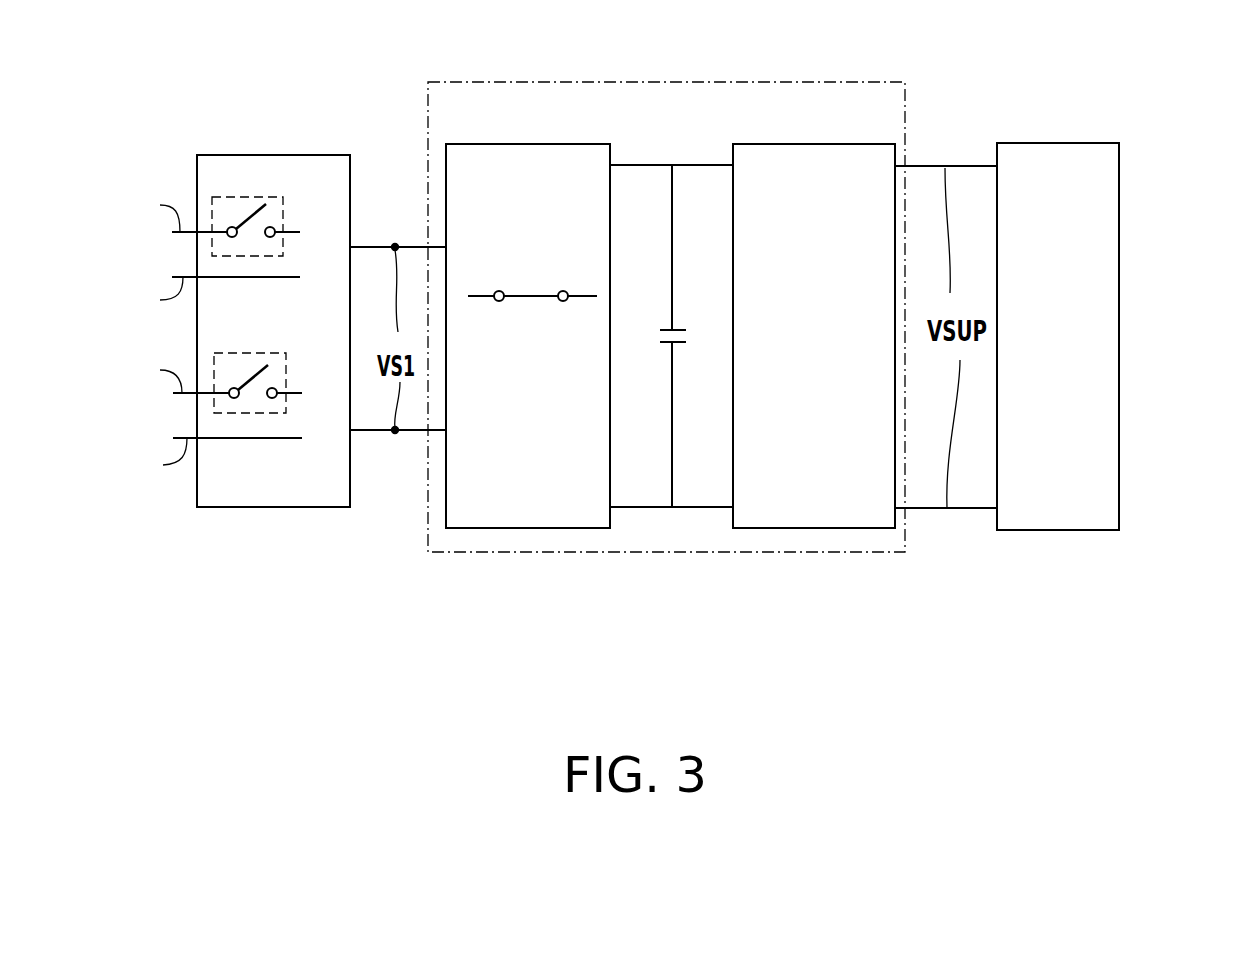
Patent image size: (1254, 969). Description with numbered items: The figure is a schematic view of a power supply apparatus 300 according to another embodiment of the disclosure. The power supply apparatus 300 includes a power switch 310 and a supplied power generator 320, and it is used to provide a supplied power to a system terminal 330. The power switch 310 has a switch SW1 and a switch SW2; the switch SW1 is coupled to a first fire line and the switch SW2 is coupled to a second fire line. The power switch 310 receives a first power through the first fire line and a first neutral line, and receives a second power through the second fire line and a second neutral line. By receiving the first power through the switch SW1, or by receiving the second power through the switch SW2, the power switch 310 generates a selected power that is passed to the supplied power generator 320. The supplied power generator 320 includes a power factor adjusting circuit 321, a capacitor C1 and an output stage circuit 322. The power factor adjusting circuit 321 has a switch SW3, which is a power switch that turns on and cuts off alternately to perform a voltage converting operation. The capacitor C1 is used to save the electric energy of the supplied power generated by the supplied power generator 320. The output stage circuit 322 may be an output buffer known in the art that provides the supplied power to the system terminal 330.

The power supply apparatus 300 is at (1214, 655).
The power switch 310 is at (237, 309).
The supplied power generator 320 is at (725, 82).
The power factor adjusting circuit 321 is at (535, 312).
The output stage circuit 322 is at (772, 143).
The system terminal 330 is at (1043, 143).
The switch SW1 is at (237, 197).
The switch SW2 is at (240, 353).
The switch SW3 is at (532, 276).
The capacitor C1 is at (655, 336).